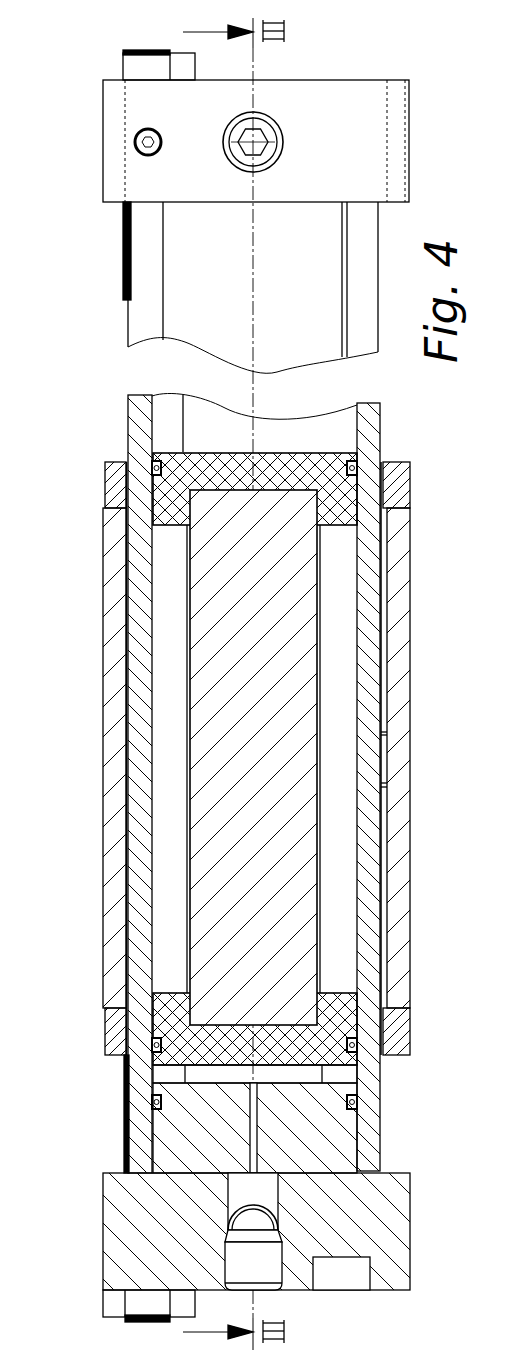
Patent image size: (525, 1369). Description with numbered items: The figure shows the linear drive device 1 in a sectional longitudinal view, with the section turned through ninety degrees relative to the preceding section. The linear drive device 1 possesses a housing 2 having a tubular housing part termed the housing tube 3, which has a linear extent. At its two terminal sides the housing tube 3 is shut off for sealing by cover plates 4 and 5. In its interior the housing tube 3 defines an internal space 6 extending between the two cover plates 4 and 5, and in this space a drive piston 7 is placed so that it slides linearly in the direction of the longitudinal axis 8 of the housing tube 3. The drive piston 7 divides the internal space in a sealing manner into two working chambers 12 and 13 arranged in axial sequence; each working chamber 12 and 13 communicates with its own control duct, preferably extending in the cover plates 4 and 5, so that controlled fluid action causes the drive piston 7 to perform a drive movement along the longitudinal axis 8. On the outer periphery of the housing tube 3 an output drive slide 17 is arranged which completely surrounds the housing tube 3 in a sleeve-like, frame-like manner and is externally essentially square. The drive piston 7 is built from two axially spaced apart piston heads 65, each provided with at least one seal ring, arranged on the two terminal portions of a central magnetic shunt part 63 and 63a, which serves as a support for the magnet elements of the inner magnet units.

The linear drive device 1 is at (111, 261).
The housing 2 is at (126, 1133).
The housing tube 3 is at (367, 1128).
The cover plate 4 is at (118, 1228).
The cover plate 5 is at (115, 137).
The internal space 6 is at (173, 402).
The drive piston 7 is at (175, 882).
The longitudinal axis 8 is at (253, 316).
The working chamber 12 is at (167, 1075).
The working chamber 13 is at (340, 437).
The output drive slide 17 is at (103, 570).
The central magnetic shunt part 63 is at (217, 748).
The central magnetic shunt part 63a is at (255, 759).
The piston head 65 is at (157, 463).